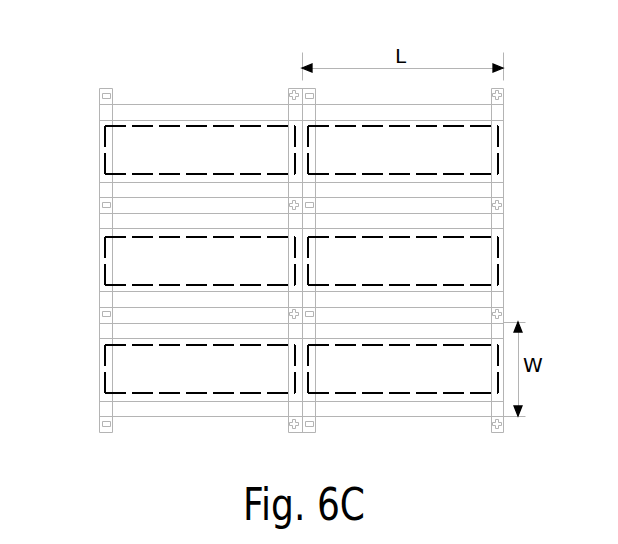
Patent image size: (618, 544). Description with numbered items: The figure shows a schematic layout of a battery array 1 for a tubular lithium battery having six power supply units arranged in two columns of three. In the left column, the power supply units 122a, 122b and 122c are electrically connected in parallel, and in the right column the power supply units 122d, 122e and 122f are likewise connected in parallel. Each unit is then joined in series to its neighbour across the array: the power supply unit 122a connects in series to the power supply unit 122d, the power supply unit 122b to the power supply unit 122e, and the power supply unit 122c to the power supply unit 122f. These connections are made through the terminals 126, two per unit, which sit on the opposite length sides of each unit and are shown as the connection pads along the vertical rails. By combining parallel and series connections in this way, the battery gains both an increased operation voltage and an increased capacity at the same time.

The wire harness / device 1 is at (135, 54).
The terminal 126 is at (99, 95).
The power supply unit 122a is at (105, 150).
The power supply unit 122b is at (105, 255).
The power supply unit 122c is at (104, 375).
The power supply unit 122d is at (498, 152).
The power supply unit 122e is at (498, 257).
The power supply unit 122f is at (447, 388).